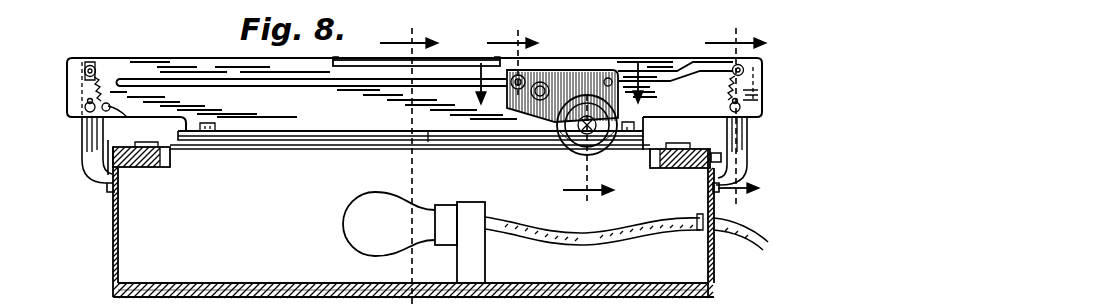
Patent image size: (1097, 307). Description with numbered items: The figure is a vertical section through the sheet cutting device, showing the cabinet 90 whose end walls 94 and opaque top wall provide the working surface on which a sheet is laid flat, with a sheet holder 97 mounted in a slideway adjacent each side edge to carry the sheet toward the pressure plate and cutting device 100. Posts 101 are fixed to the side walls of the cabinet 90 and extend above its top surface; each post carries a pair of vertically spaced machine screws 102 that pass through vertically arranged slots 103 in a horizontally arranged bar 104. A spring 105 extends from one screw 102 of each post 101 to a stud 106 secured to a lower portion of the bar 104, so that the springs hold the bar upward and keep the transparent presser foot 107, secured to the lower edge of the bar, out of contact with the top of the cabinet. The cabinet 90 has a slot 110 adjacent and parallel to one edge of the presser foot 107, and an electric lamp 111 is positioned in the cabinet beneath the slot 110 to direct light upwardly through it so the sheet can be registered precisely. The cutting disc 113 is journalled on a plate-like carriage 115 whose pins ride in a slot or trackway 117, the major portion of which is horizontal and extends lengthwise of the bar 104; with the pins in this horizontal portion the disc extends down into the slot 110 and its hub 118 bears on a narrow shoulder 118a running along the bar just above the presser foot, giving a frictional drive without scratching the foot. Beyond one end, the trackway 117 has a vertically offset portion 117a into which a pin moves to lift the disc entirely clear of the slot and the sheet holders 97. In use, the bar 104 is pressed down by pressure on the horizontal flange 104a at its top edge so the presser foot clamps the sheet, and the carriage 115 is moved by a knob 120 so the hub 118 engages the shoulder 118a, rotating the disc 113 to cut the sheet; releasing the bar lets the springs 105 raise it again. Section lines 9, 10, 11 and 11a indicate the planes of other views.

The section line 9- 9 is at (553, 84).
The section line 10- 10 is at (409, 157).
The section line 11- 11 is at (550, 119).
The section line 11a- 11a is at (735, 116).
The cabinet 90 is at (106, 227).
The end walls 94 is at (182, 254).
The sheet holder 97 is at (142, 155).
The pressure plate and cutting device 100 is at (294, 124).
The post 101 is at (88, 147).
The machine screws 102 is at (85, 107).
The slots 103 is at (97, 65).
The bar 104 is at (172, 60).
The horizontal flange 104a is at (452, 62).
The spring 105 is at (95, 86).
The stud 106 is at (419, 129).
The presser foot 107 is at (310, 138).
The slot 110 is at (213, 150).
The electric lamp 111 is at (362, 228).
The cutting disc 113 is at (580, 148).
The carriage 115 is at (585, 73).
The slot or trackway 117 is at (310, 87).
The offset portion 117a is at (702, 70).
The hub 118 is at (547, 131).
The shoulder 118a is at (428, 130).
The knob 120 is at (538, 82).